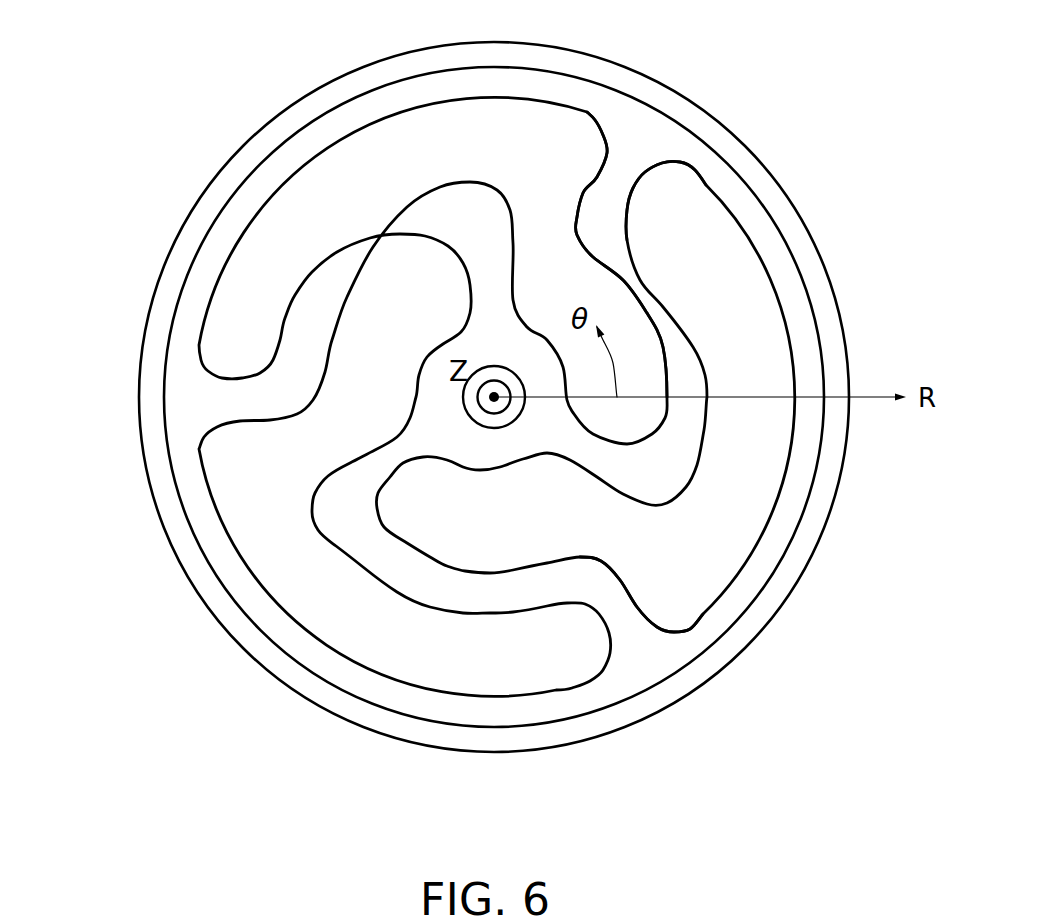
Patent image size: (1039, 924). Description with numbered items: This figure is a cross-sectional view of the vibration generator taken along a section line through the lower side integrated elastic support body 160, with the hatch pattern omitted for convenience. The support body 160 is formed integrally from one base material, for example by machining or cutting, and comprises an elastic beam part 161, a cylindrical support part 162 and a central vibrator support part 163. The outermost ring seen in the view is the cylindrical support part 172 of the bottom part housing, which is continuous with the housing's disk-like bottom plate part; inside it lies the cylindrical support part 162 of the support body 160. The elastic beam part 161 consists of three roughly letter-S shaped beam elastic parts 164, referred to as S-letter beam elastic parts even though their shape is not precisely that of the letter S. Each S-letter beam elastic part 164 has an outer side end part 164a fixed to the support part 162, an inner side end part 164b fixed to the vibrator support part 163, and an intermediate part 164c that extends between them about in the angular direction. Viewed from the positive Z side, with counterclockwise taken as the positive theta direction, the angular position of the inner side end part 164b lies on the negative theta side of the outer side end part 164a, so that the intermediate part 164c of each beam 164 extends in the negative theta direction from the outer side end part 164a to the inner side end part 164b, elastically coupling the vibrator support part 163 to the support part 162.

The lower side integrated elastic support body 160 is at (474, 406).
The elastic beam part 161 is at (437, 172).
The cylindrical support part 162 is at (160, 432).
The vibrator support part 163 is at (487, 447).
The S-letter beam elastic part 164 is at (378, 240).
The outer side end part 164a is at (618, 183).
The inner side end part 164b is at (607, 458).
The intermediate part 164c is at (690, 337).
The cylindrical support part 172 is at (150, 325).